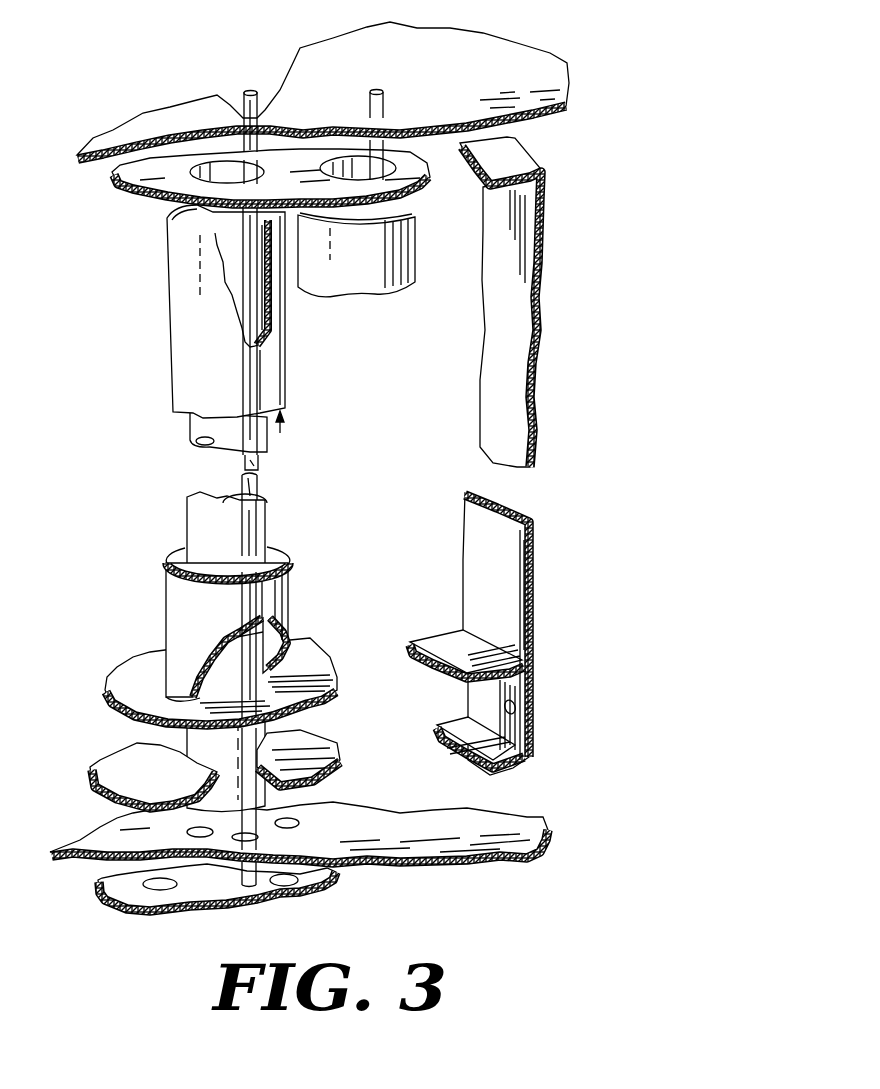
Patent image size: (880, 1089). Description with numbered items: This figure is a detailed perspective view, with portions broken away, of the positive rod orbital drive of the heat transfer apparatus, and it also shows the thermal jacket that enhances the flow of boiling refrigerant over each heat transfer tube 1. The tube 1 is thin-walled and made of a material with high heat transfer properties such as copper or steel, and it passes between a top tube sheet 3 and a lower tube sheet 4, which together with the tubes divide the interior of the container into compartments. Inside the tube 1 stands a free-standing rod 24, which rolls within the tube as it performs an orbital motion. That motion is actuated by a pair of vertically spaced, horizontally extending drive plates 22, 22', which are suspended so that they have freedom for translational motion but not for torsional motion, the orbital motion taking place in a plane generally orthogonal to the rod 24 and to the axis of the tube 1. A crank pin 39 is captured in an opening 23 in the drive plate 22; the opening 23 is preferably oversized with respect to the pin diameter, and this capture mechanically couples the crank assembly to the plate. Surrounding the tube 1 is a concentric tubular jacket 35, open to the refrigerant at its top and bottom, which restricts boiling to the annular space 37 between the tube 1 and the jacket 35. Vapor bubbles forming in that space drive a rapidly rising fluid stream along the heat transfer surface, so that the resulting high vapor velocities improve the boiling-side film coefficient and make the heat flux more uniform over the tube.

The heat transfer tube 1 is at (195, 423).
The top tube sheet 3 is at (110, 170).
The lower tube sheet 4 is at (118, 770).
The drive plate 22 is at (323, 81).
The drive plate 22' is at (322, 855).
The opening 23 is at (222, 110).
The rod 24 is at (385, 100).
The tubular jacket 35 is at (180, 298).
The annular space 37 is at (167, 208).
The crank pin 39 is at (287, 435).